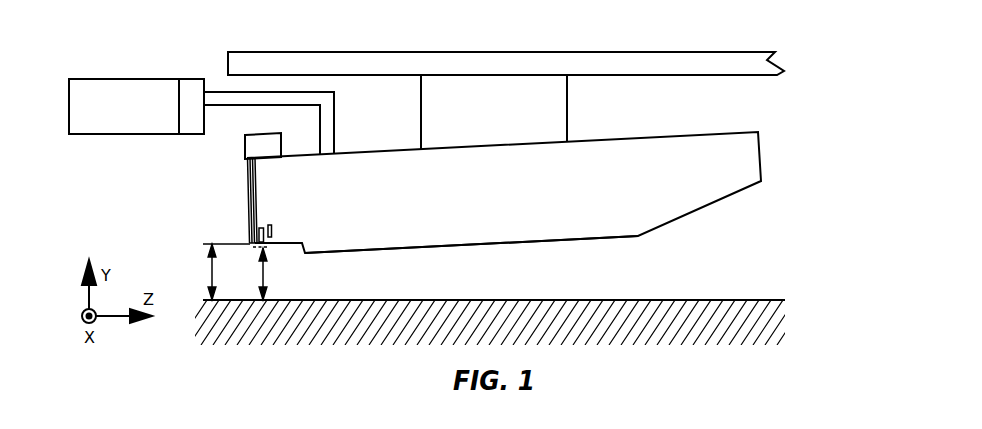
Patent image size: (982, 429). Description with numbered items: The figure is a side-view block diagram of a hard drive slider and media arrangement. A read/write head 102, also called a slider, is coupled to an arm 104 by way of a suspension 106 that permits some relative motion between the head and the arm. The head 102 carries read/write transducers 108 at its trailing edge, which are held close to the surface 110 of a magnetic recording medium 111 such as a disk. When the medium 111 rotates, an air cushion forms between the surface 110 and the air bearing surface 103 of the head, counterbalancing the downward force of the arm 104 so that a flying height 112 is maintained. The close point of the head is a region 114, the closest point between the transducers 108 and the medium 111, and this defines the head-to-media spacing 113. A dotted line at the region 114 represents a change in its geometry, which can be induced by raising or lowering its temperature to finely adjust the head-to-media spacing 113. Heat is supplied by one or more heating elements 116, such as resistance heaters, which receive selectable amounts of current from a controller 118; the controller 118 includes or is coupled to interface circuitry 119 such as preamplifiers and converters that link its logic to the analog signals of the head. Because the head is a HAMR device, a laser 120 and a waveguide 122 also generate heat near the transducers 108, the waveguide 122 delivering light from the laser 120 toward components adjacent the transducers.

The read/write head 102 is at (672, 140).
The air bearing surface 103 is at (385, 252).
The arm 104 is at (715, 58).
The suspension 106 is at (567, 104).
The read/write transducers 108 is at (250, 222).
The surface 110 is at (675, 300).
The magnetic recording medium 111 is at (686, 336).
The flying height 112 is at (215, 272).
The head-to-media spacing 113 is at (248, 274).
The region 114 is at (268, 249).
The heating elements 116 is at (268, 225).
The controller 118 is at (120, 78).
The interface circuitry 119 is at (190, 78).
The laser 120 is at (262, 140).
The waveguide 122 is at (250, 175).